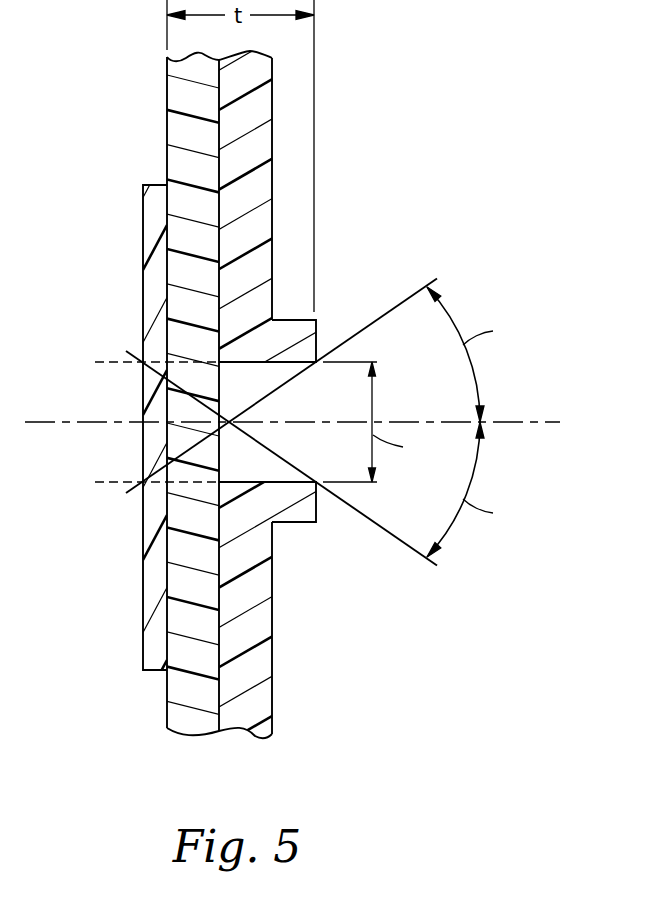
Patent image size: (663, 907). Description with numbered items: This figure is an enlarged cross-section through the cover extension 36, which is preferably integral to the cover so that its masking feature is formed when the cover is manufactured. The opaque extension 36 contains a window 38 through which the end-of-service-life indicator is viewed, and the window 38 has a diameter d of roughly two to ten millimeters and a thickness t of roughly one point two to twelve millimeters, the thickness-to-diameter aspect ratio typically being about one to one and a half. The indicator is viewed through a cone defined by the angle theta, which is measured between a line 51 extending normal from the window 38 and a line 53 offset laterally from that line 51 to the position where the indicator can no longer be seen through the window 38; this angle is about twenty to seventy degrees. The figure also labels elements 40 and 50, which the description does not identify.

The cover extension 36 is at (263, 181).
The window 38 is at (292, 330).
The coating layer 40 is at (153, 225).
The hole / aperture 50 is at (319, 340).
The line extending normal from the window 51 is at (553, 422).
The line offset laterally from the normal line 53 is at (425, 567).